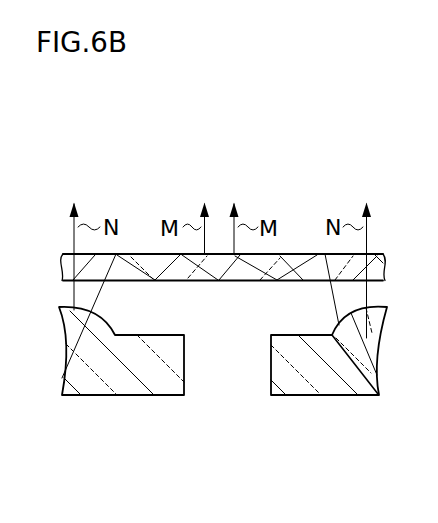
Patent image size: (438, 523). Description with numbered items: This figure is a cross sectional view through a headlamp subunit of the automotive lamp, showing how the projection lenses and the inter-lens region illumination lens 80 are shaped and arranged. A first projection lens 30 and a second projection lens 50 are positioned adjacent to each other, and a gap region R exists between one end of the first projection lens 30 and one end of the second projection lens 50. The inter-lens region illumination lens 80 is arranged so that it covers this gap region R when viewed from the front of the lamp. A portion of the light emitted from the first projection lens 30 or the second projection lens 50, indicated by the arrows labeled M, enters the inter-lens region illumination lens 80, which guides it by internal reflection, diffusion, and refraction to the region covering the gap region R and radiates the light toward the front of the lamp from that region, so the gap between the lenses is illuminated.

The inter-lens region illumination lens 80 is at (297, 254).
The first projection lens 30 is at (137, 396).
The second projection lens 50 is at (343, 396).
The gap region R is at (227, 383).